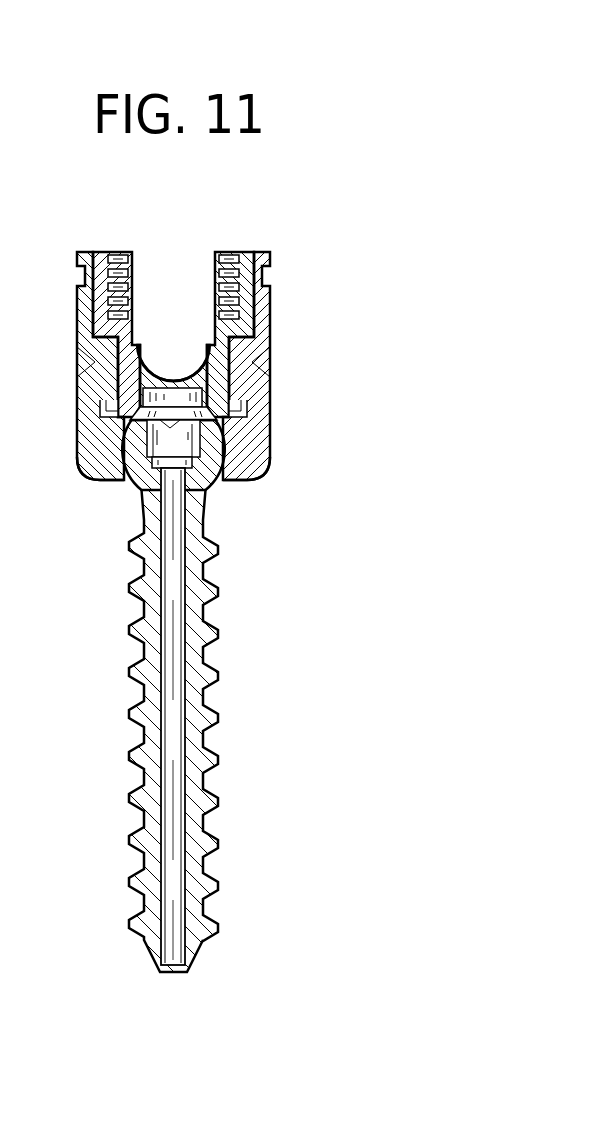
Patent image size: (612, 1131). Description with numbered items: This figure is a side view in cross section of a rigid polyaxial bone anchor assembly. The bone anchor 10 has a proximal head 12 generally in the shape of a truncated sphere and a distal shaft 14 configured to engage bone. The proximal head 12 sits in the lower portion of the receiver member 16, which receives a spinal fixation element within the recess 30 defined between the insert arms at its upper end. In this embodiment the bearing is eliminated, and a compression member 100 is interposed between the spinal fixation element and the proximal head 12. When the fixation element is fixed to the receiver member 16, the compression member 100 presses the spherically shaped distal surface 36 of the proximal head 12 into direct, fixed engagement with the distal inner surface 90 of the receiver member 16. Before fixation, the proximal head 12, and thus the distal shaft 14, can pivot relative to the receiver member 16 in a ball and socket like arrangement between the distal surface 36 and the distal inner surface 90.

The bone anchor 10 is at (303, 643).
The proximal head 12 is at (217, 457).
The distal shaft 14 is at (213, 793).
The receiver member 16 is at (270, 424).
The recess 30 is at (115, 255).
The distal surface 36 is at (123, 482).
The distal inner surface 90 is at (115, 455).
The compression member 100 is at (130, 353).